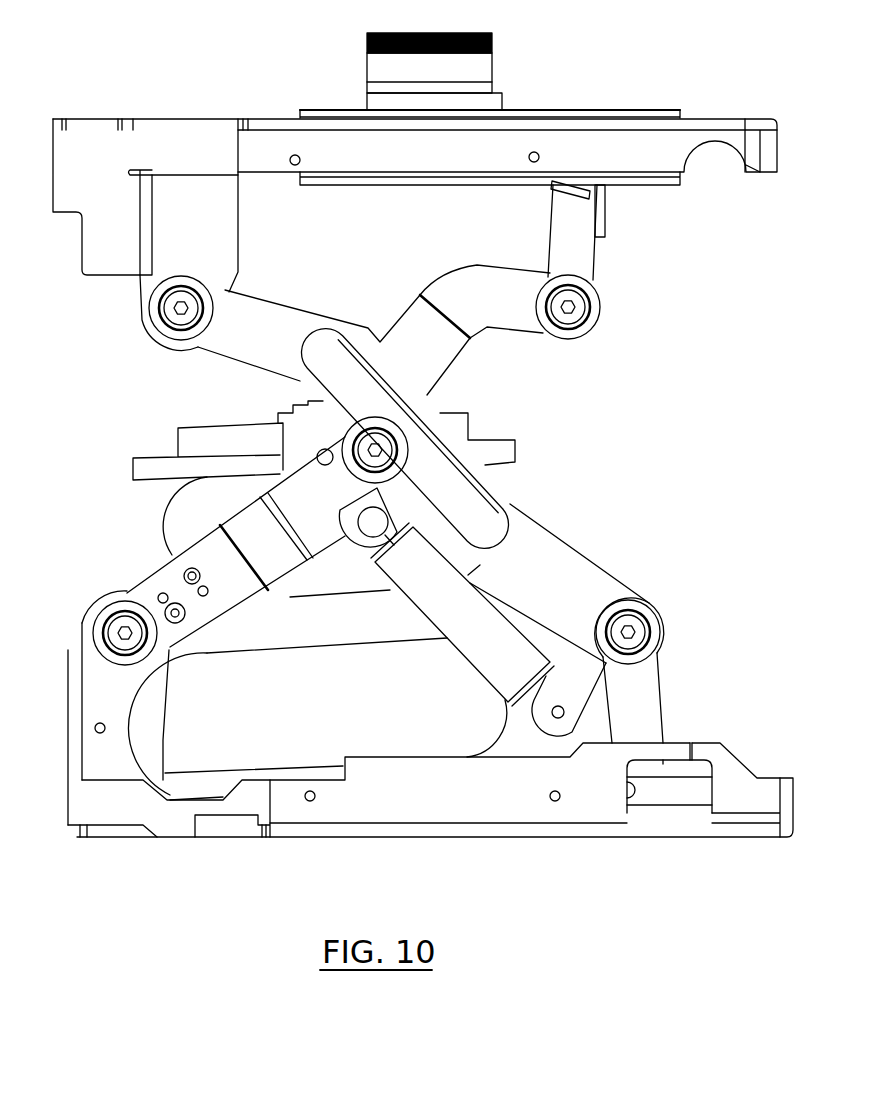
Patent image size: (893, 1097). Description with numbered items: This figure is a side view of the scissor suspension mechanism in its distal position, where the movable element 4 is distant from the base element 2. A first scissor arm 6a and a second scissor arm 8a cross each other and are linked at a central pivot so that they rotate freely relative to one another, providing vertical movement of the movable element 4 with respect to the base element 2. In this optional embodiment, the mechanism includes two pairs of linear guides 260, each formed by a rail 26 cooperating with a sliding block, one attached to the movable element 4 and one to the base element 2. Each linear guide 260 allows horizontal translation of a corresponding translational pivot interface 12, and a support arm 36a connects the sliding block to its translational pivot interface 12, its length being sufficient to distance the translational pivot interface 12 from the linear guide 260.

The base element 2 is at (281, 844).
The movable element 4 is at (191, 112).
The first scissor arm 6a is at (462, 288).
The second scissor arm 8a is at (542, 571).
The translational pivot interface 12 is at (577, 318).
The rail 26 is at (598, 111).
The support arm 36a is at (578, 257).
The linear guide 260 is at (654, 192).